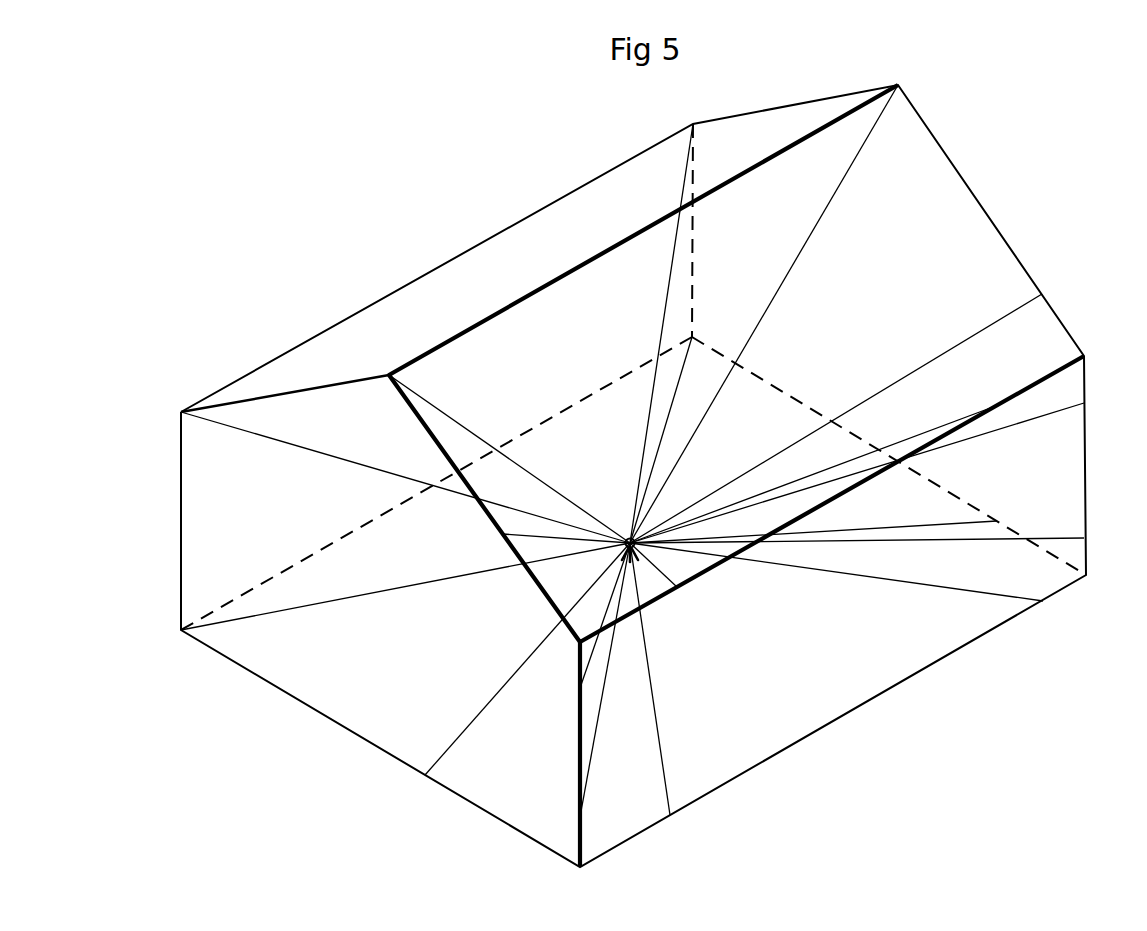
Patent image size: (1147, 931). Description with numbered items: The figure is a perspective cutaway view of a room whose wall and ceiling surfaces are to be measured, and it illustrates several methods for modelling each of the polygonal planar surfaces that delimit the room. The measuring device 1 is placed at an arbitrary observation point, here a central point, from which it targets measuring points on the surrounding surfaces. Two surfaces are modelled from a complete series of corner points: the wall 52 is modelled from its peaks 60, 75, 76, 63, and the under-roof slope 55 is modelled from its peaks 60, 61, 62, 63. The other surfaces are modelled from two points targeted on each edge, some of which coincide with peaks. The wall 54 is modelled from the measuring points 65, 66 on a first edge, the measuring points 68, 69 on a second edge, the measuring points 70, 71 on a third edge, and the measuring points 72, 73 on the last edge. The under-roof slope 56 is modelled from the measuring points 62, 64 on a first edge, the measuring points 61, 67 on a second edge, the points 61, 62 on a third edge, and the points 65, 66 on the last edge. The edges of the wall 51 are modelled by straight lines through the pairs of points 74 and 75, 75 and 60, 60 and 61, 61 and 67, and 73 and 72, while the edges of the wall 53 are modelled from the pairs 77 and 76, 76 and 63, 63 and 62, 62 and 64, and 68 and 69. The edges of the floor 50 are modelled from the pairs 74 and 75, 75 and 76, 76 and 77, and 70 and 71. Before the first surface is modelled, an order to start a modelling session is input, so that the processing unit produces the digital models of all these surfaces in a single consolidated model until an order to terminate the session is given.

The device 1 is at (623, 517).
The floor 50 is at (418, 695).
The wall 51 is at (268, 619).
The wall 52 is at (248, 466).
The wall 53 is at (930, 283).
The wall 54 is at (840, 637).
The under-roof slope 55 is at (498, 265).
The under-roof slope 56 is at (896, 254).
The peak 60 is at (384, 467).
The peak 61 is at (495, 441).
The peak 62 is at (772, 300).
The peak 63 is at (665, 320).
The measuring point 64 is at (852, 407).
The measuring point 65 is at (812, 457).
The measuring point 66 is at (668, 578).
The measuring point 67 is at (548, 539).
The measuring point 68 is at (873, 465).
The measuring point 69 is at (873, 534).
The measuring point 70 is at (850, 585).
The measuring point 71 is at (662, 696).
The measuring point 72 is at (588, 691).
The measuring point 73 is at (588, 626).
The measuring point 74 is at (514, 671).
The peak 75 is at (388, 600).
The peak 76 is at (678, 426).
The measuring point 77 is at (826, 515).